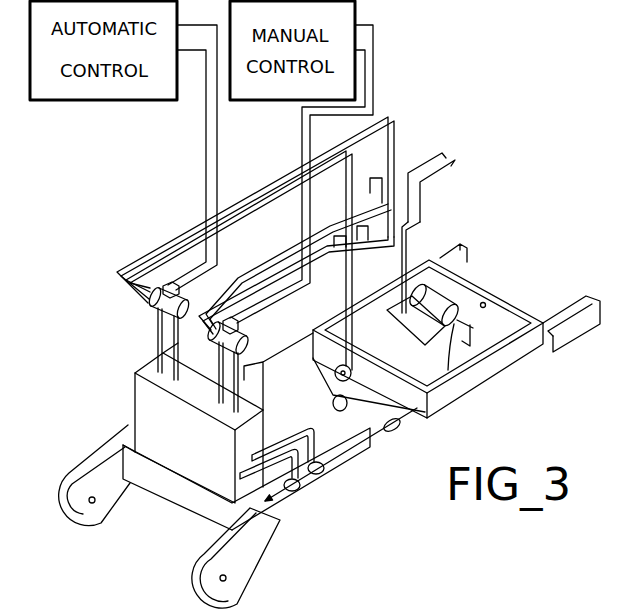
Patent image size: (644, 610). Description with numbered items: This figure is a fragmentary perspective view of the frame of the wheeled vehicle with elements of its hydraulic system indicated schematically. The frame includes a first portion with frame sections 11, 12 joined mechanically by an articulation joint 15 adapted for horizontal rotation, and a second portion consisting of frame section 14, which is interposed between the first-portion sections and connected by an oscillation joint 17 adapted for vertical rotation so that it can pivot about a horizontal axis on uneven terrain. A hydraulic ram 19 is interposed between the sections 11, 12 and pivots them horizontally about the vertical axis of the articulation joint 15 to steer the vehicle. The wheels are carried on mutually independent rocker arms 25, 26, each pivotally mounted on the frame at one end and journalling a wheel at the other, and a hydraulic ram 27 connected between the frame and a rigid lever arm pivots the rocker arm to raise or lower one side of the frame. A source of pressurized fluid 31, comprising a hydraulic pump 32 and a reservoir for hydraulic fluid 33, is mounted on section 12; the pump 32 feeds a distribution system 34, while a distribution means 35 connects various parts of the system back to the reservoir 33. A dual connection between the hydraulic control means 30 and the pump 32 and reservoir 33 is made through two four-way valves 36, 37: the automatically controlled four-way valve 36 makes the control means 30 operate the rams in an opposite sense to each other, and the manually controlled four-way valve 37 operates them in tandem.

The frame section 11 is at (368, 458).
The frame section 12 is at (443, 406).
The frame section 14 is at (581, 324).
The articulation joint 15 is at (324, 410).
The oscillation joint 17 is at (486, 303).
The hydraulic ram 19 is at (391, 429).
The rocker arm 25 is at (270, 543).
The rocker arm 26 is at (113, 507).
The hydraulic ram 27 is at (312, 476).
The hydraulic control means 30 is at (134, 393).
The source of pressurized fluid 31 is at (457, 295).
The hydraulic pump 32 is at (456, 326).
The reservoir for hydraulic fluid 33 is at (448, 370).
The distribution system 34 is at (430, 194).
The distribution means 35 is at (342, 246).
The four-way valve 36 is at (148, 300).
The four-way valve 37 is at (245, 333).